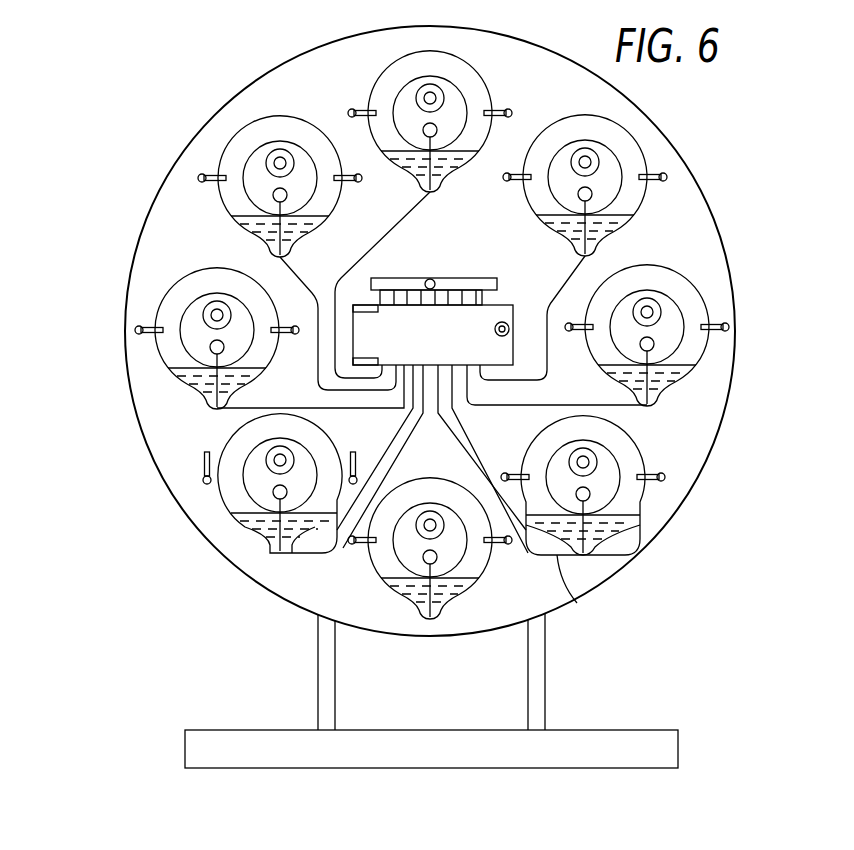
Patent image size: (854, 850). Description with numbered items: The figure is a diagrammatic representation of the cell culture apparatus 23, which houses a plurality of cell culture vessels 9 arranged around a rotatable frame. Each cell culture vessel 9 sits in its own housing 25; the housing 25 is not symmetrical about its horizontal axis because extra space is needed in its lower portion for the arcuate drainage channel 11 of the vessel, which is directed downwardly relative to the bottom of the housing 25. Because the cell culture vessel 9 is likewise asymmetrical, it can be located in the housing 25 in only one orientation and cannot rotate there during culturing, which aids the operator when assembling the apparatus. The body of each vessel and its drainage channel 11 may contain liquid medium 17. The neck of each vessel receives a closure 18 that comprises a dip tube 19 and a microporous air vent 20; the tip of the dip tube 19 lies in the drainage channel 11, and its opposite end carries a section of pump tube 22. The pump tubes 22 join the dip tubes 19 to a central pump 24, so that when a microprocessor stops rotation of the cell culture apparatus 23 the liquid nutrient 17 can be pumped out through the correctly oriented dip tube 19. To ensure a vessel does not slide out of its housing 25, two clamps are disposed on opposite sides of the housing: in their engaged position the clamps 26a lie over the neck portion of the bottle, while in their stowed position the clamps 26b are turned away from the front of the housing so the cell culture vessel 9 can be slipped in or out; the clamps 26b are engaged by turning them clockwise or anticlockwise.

The cell culture vessel 9 is at (220, 197).
The arcuate drainage channel 11 is at (440, 188).
The liquid medium 17 is at (620, 230).
The closure 18 is at (620, 168).
The dip tube 19 is at (592, 198).
The microporous air vent 20 is at (590, 162).
The pump tube 22 is at (347, 275).
The cell culture apparatus 23 is at (286, 58).
The pump 24 is at (414, 351).
The housing 25 is at (562, 242).
The clamps in engaged position 26a is at (290, 328).
The clamps in stowed position 26b is at (348, 468).